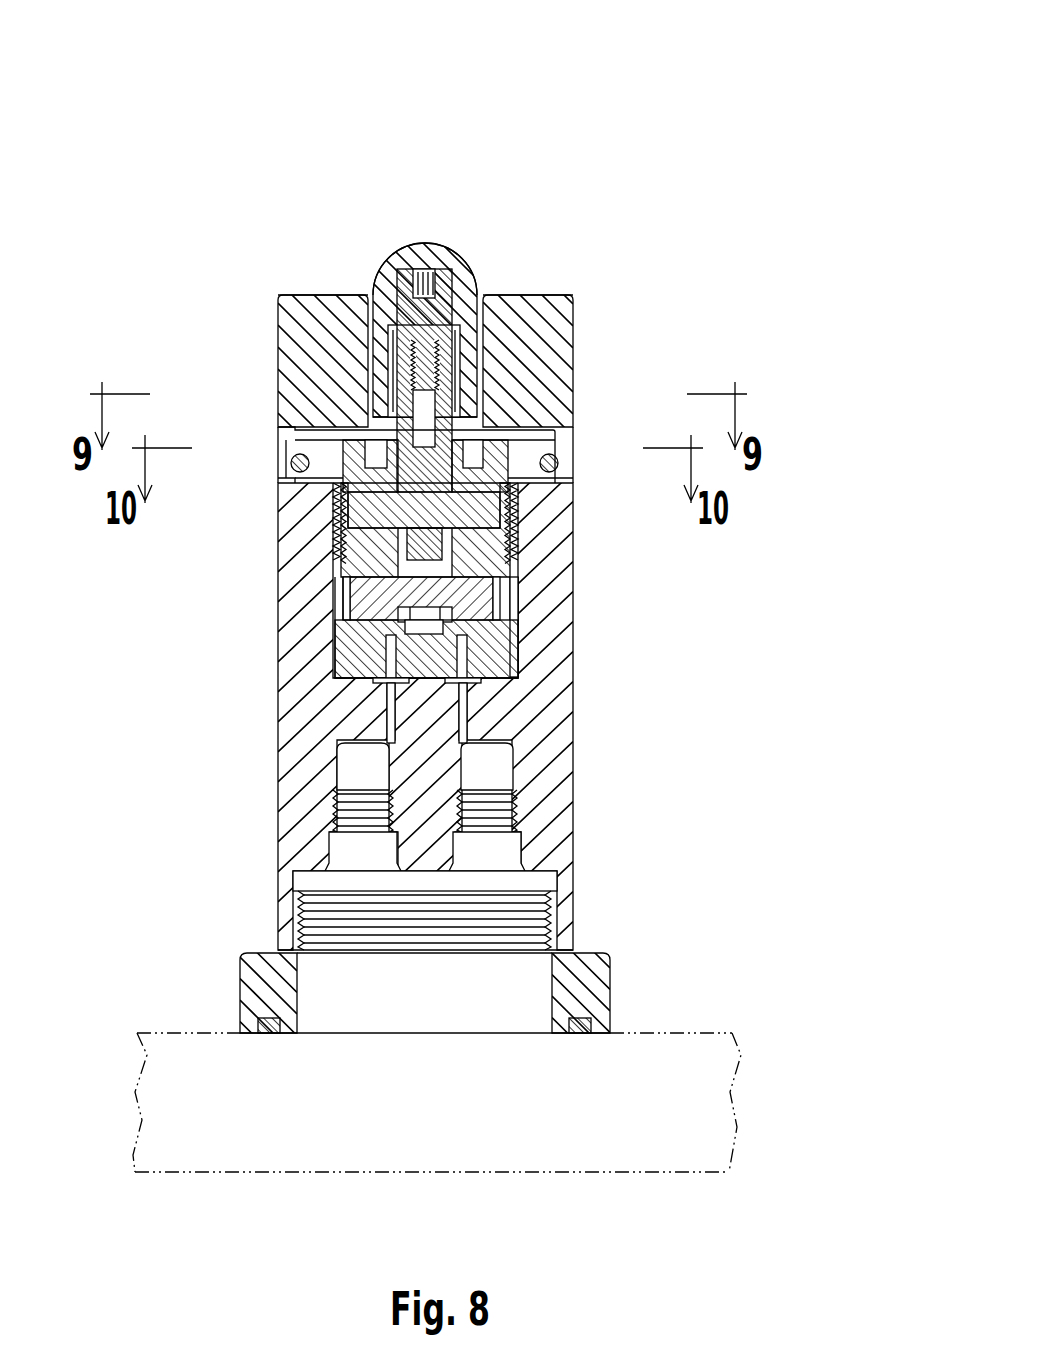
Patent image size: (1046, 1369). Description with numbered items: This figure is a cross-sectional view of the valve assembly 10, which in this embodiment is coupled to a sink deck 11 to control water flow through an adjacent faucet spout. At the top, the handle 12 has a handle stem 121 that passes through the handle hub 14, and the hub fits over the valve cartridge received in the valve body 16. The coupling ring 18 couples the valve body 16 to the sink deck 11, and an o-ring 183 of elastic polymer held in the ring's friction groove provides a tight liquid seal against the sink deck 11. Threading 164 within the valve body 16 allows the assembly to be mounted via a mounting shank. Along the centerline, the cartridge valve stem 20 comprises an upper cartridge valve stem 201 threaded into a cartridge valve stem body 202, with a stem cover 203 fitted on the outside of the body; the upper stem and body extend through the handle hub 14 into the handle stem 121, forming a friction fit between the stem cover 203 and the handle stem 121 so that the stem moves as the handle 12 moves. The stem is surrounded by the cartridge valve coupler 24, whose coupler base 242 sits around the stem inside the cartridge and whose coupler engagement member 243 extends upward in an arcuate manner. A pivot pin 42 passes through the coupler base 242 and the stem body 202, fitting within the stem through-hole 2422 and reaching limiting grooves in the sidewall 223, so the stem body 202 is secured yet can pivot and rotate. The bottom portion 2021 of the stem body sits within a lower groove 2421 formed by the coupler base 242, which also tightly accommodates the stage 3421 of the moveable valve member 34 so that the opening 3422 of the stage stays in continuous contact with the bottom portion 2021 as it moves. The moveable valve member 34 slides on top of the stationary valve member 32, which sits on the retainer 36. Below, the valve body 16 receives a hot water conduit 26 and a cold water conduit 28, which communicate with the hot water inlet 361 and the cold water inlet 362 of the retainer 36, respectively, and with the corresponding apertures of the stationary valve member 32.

The valve assembly 10 is at (234, 70).
The sink deck 11 is at (295, 1172).
The handle 12 is at (445, 229).
The handle stem 121 is at (358, 322).
The handle hub 14 is at (260, 307).
The valve body 16 is at (724, 716).
The threading 164 is at (306, 906).
The coupling ring 18 is at (232, 965).
The o-ring 183 is at (582, 1035).
The cartridge valve stem 20 is at (484, 383).
The upper cartridge valve stem 201 is at (468, 262).
The cartridge valve stem body 202 is at (407, 382).
The bottom portion 2021 is at (412, 598).
The stem cover 203 is at (456, 347).
The sidewall 223 is at (510, 630).
The cartridge valve coupler 24 is at (340, 441).
The coupler base 242 is at (343, 549).
The lower groove 2421 is at (512, 540).
The stem through-hole 2422 is at (337, 517).
The coupler engagement member 243 is at (490, 450).
The hot water conduit 26 is at (553, 774).
The cold water conduit 28 is at (319, 744).
The stationary valve member 32 is at (512, 657).
The moveable valve member 34 is at (508, 612).
The stage 3421 is at (505, 575).
The opening 3422 is at (350, 618).
The retainer 36 is at (510, 672).
The hot water inlet 361 is at (490, 695).
The cold water inlet 362 is at (378, 700).
The pivot pin 42 is at (503, 494).